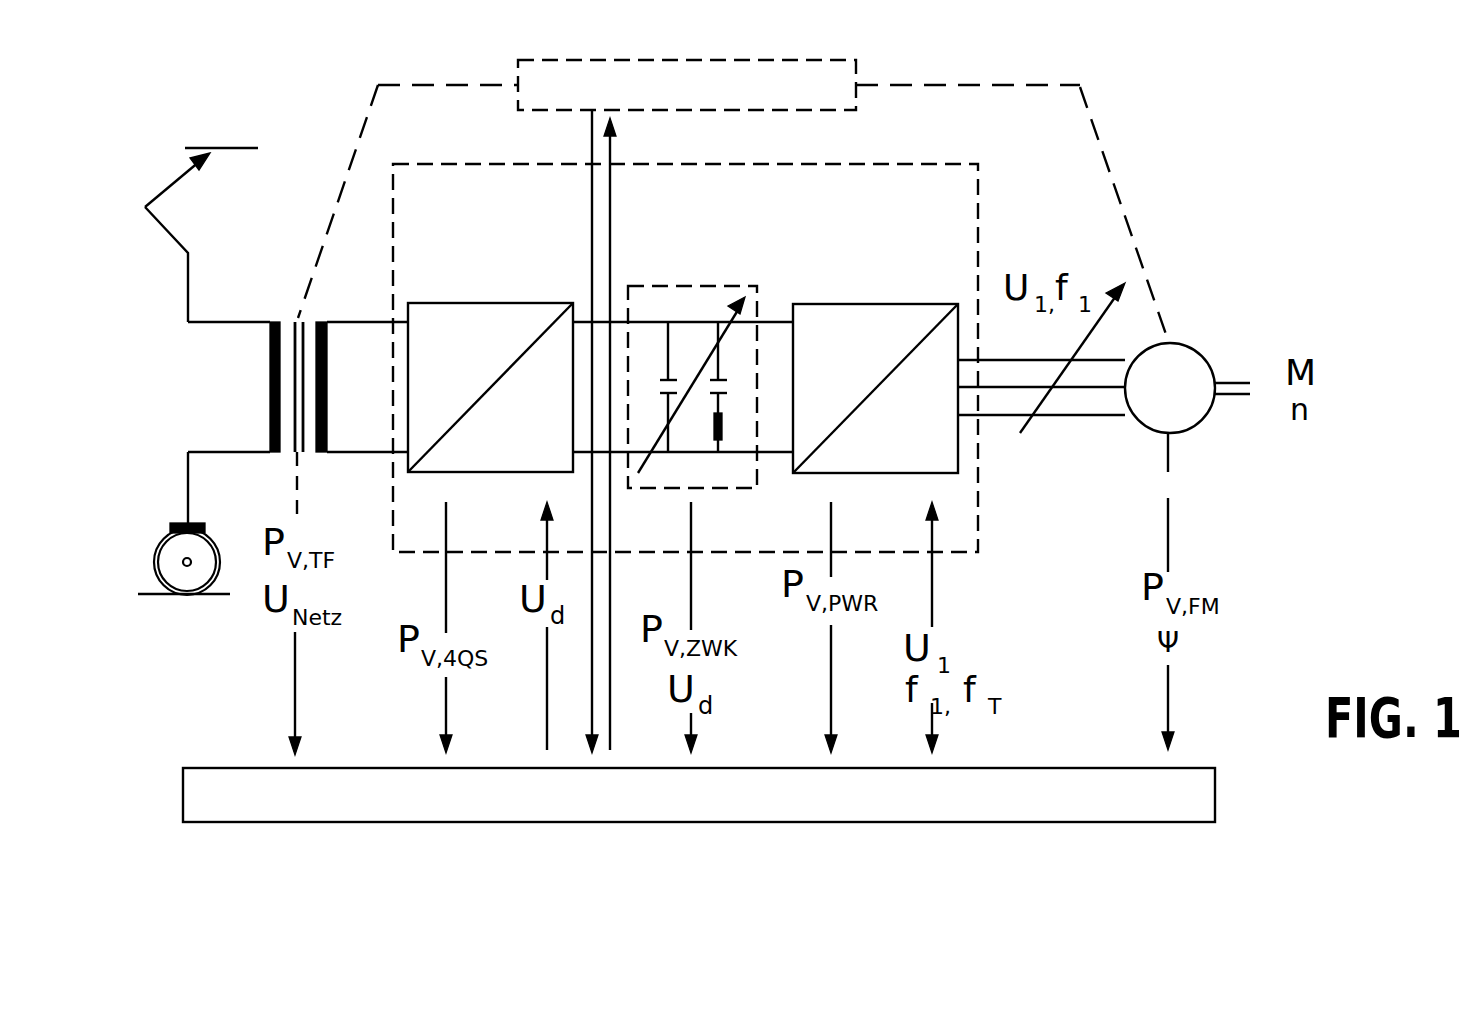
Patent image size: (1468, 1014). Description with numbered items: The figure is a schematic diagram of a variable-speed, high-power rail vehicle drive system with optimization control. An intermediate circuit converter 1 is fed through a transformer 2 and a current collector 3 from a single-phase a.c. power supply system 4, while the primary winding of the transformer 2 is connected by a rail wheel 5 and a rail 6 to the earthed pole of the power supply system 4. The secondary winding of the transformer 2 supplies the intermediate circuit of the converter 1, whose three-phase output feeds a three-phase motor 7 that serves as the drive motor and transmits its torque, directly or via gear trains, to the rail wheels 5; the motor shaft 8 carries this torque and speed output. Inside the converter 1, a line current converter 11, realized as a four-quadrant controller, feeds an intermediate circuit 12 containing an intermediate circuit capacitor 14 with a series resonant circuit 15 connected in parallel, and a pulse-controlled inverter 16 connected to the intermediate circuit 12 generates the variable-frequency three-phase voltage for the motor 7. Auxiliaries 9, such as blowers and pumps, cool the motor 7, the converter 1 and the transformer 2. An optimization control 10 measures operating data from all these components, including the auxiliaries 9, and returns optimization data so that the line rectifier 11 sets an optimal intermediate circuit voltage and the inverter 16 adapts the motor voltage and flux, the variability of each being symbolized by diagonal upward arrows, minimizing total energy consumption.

The intermediate circuit converter 1 is at (978, 512).
The transformer 2 is at (291, 320).
The current collector 3 is at (176, 183).
The single-phase a.c. power supply system 4 is at (258, 148).
The rail wheel 5 is at (200, 548).
The rail 6 is at (218, 598).
The three-phase motor 7 is at (1200, 352).
The motor shaft 8 is at (1230, 398).
The auxiliaries 9 is at (856, 70).
The optimization control 10 is at (1215, 793).
The line current converter 11 is at (443, 303).
The intermediate circuit 12 is at (757, 288).
The intermediate circuit capacitor 14 is at (655, 378).
The series resonant circuit 15 is at (722, 407).
The pulse-controlled inverter 16 is at (852, 304).